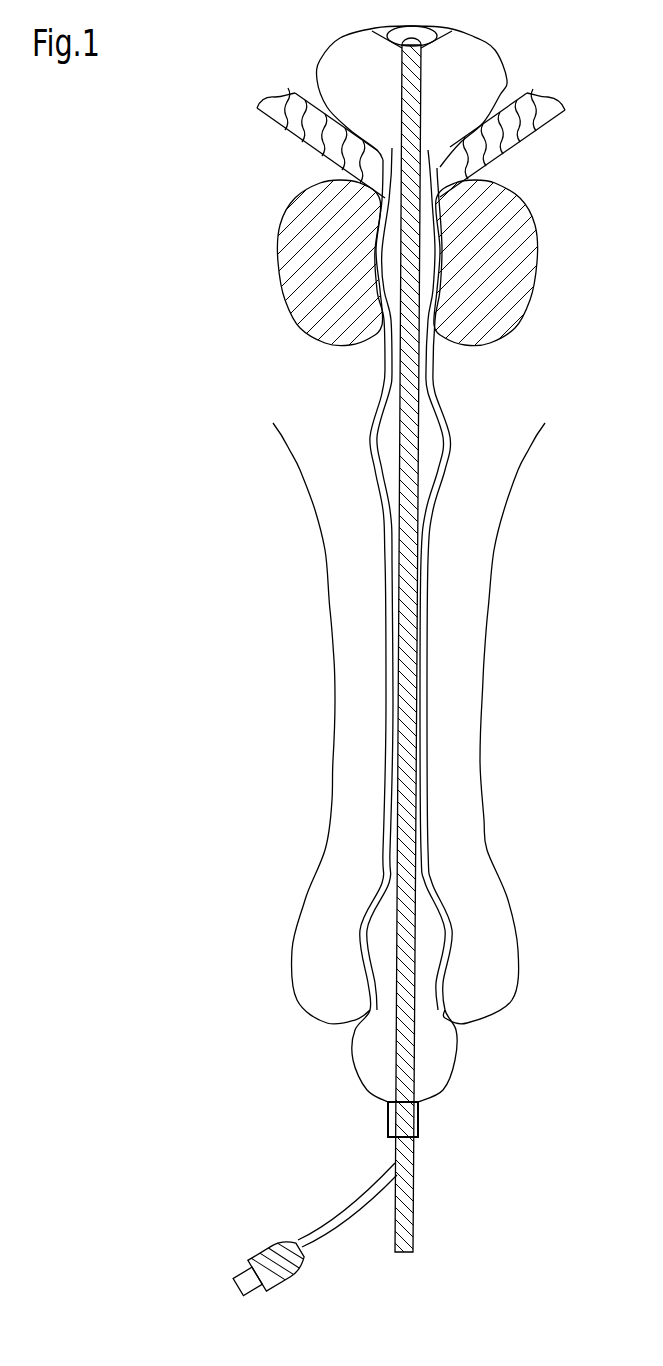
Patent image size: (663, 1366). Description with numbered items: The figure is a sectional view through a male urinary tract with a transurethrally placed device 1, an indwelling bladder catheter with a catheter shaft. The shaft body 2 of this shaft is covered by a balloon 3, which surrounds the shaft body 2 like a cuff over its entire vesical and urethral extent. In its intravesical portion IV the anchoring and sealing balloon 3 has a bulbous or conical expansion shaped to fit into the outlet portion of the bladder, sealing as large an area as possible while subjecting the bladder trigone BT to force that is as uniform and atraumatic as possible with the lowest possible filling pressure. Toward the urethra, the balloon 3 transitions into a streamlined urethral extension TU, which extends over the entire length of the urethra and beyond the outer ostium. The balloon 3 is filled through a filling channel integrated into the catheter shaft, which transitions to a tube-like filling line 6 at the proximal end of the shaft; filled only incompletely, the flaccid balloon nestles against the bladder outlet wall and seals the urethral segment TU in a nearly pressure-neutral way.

The device 1 is at (327, 62).
The shaft body 2 is at (413, 1185).
The balloon 3 is at (468, 581).
The intravesical portion IV is at (475, 63).
The urethral extension TU is at (427, 437).
The bladder trigone BT is at (286, 130).
The filling line 6 is at (327, 1218).